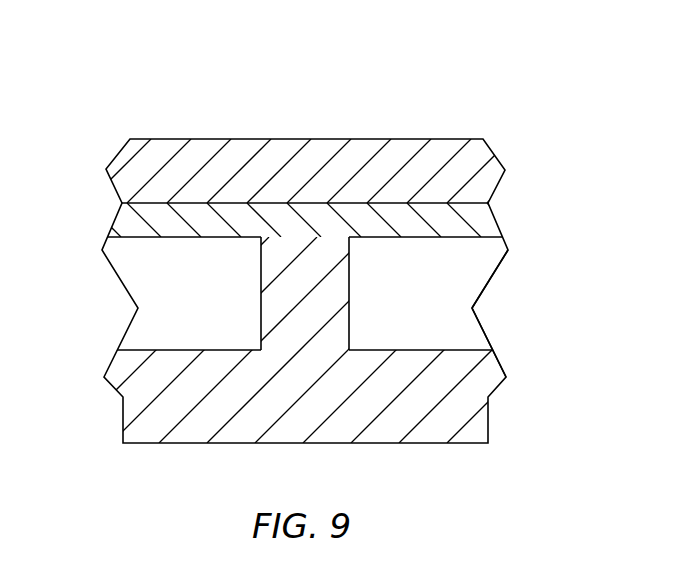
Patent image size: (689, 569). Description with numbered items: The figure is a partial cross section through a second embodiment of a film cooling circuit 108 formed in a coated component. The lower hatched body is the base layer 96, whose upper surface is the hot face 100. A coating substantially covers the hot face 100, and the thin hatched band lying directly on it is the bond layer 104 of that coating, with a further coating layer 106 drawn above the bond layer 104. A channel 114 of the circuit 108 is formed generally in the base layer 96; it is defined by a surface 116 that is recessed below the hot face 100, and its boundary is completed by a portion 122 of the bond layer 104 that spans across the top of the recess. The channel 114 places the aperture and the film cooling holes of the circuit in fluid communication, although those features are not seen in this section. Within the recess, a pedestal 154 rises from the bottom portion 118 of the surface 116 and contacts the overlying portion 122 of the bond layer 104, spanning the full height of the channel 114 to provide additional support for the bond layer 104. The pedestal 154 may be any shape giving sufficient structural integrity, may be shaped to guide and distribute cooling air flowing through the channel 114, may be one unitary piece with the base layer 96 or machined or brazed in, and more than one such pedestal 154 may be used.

The base layer 96 is at (473, 392).
The hot face 100 is at (173, 236).
The bond layer 104 is at (467, 222).
The top layer 106 is at (207, 157).
The film cooling circuit 108 is at (515, 90).
The channel 114 is at (436, 306).
The surface 116 is at (170, 347).
The bottom portion 118 is at (460, 350).
The portion of bond layer 122 is at (443, 237).
The pedestal 154 is at (297, 289).